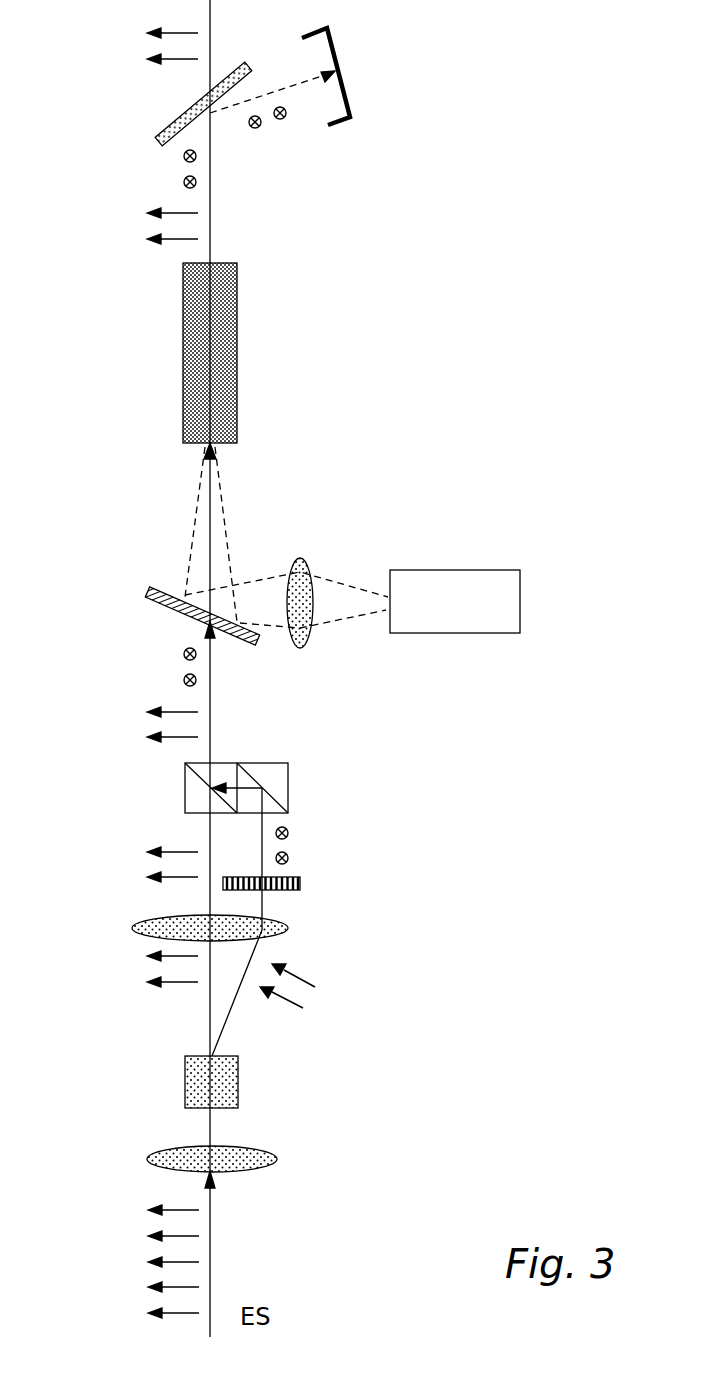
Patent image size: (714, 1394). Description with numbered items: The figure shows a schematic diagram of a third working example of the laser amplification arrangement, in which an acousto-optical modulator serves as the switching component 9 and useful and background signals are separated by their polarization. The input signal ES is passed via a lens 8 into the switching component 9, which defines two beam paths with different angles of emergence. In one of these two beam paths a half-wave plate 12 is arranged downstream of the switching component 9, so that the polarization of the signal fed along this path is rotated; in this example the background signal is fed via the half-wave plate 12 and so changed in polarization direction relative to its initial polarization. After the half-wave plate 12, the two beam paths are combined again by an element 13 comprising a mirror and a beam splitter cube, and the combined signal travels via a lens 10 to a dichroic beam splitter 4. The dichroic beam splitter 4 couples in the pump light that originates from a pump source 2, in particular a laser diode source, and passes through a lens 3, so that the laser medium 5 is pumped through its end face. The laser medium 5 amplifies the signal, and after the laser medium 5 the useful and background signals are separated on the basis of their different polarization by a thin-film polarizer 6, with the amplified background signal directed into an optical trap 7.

The pump source 2 is at (423, 582).
The lens 3 is at (305, 578).
The dichroic beam splitter 4 is at (162, 585).
The laser medium 5 is at (223, 340).
The thin-film polarizer 6 is at (163, 132).
The optical trap 7 is at (348, 98).
The lens 8 is at (240, 1162).
The switching component 9 is at (228, 1080).
The lens 10 is at (273, 928).
The half-wave plate 12 is at (298, 882).
The element comprising mirror and beam splitter cube 13 is at (278, 775).